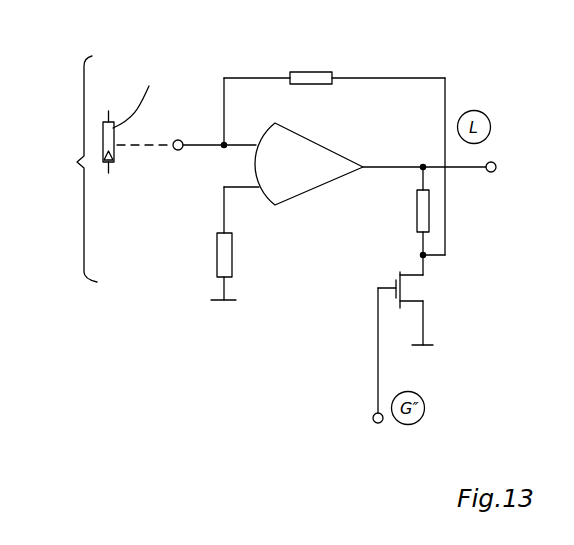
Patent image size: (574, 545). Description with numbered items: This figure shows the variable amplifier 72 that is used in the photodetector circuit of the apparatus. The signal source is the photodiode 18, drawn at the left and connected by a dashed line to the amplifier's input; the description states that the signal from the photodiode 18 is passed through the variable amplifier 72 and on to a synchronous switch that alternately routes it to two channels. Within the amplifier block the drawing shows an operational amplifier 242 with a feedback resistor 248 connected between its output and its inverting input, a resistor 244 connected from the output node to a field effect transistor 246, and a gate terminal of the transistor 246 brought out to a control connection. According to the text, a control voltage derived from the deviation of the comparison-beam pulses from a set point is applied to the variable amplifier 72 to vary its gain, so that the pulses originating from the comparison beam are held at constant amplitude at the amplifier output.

The variable amplifier 72 is at (61, 169).
The photodiode 18 is at (115, 158).
The feedback resistor 248 is at (308, 73).
The amplifier 242 is at (313, 155).
The resistor 244 is at (420, 207).
The field effect transistor 246 is at (418, 292).